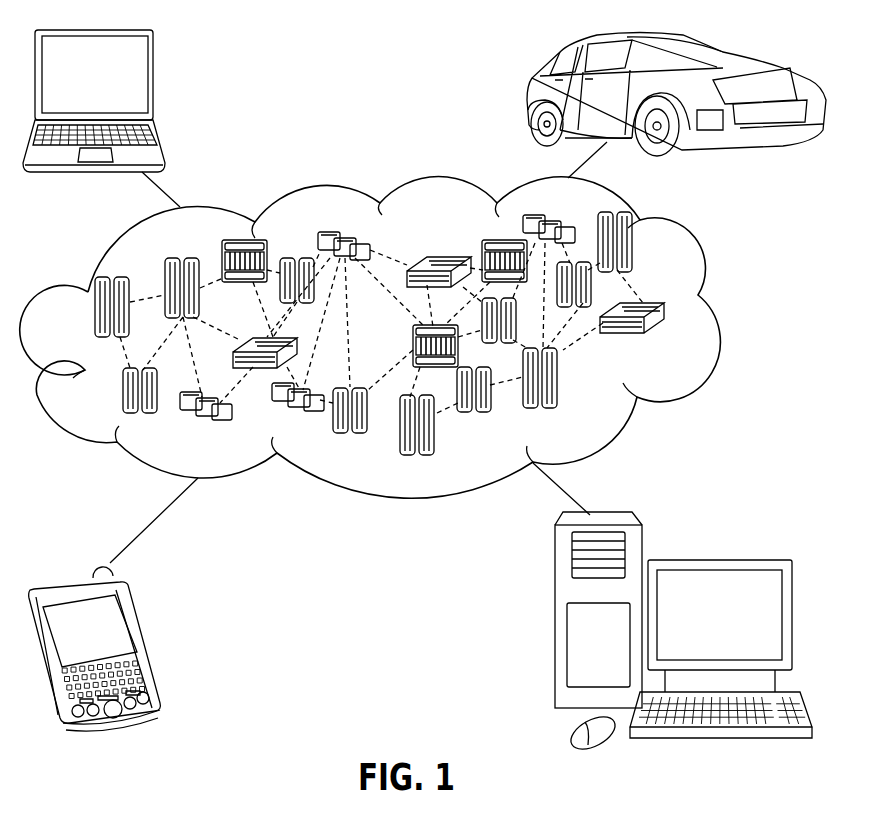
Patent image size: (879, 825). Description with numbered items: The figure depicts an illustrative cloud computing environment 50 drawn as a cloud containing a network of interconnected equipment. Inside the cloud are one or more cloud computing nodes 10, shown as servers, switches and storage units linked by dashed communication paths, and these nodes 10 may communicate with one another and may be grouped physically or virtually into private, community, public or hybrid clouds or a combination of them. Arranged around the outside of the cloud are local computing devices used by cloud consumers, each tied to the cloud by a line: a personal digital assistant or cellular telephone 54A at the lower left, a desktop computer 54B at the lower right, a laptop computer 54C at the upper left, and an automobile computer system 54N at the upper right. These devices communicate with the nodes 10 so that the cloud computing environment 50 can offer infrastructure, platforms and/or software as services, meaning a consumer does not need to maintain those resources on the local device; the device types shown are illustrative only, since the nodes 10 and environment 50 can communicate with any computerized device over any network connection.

The cloud computing node 10 is at (665, 339).
The cloud computing environment 50 is at (717, 313).
The personal digital assistant or cellular telephone 54A is at (145, 643).
The desktop computer 54B is at (717, 560).
The laptop computer 54C is at (155, 83).
The automobile computer system 54N is at (532, 93).